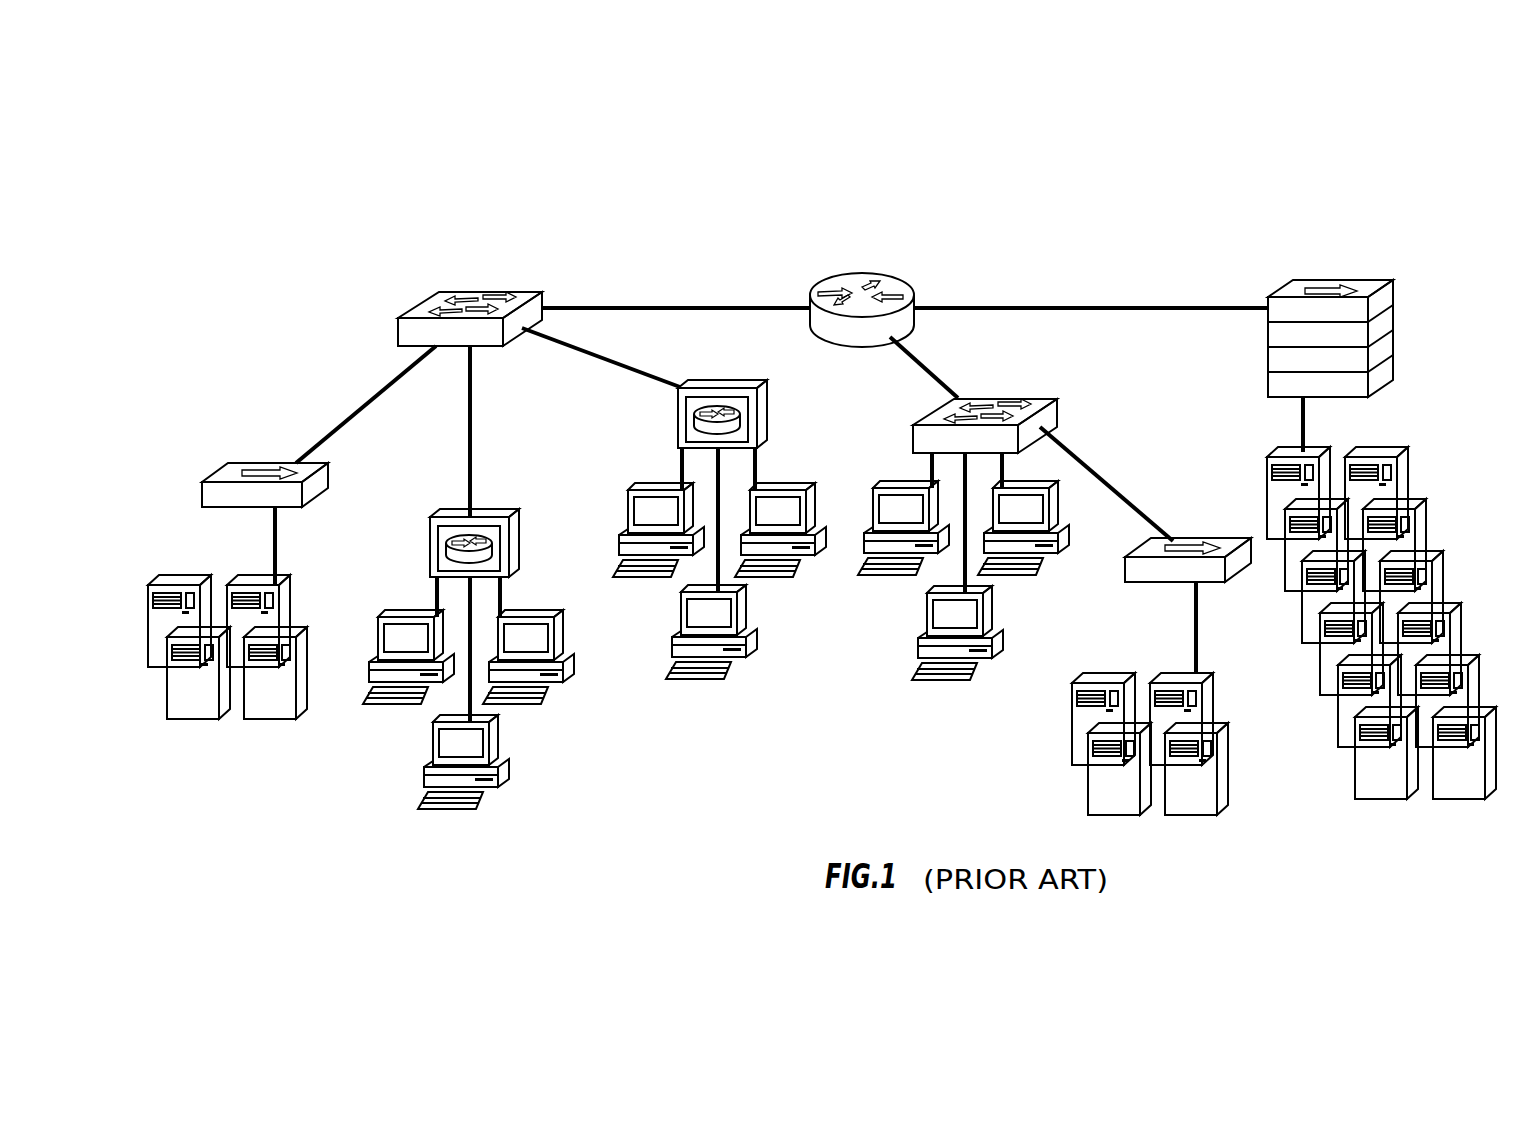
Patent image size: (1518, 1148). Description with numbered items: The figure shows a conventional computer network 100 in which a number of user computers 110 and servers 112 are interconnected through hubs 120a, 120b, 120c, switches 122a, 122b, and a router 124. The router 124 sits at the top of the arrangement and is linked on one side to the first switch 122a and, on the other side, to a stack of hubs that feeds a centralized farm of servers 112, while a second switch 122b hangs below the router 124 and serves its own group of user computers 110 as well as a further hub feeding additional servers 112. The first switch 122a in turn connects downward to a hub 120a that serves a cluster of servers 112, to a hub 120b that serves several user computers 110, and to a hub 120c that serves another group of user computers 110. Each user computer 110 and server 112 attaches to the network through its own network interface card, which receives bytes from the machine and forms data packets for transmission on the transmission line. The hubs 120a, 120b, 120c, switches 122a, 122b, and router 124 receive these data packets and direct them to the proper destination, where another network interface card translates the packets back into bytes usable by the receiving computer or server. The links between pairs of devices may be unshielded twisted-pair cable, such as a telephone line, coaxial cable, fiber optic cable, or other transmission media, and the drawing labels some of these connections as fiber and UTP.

The computer network 100 is at (814, 520).
The user computer 110 is at (548, 598).
The server 112 is at (179, 580).
The hub 120a is at (201, 496).
The hub 120b is at (429, 552).
The hub 120c is at (678, 426).
The switch 122a is at (430, 300).
The switch 122b is at (929, 417).
The router 124 is at (815, 284).